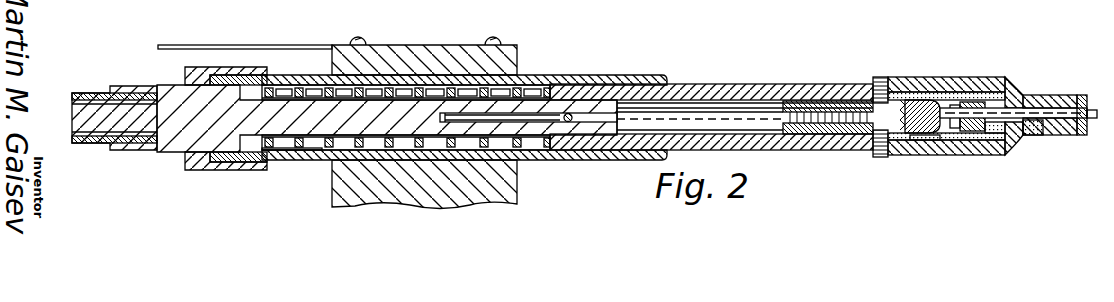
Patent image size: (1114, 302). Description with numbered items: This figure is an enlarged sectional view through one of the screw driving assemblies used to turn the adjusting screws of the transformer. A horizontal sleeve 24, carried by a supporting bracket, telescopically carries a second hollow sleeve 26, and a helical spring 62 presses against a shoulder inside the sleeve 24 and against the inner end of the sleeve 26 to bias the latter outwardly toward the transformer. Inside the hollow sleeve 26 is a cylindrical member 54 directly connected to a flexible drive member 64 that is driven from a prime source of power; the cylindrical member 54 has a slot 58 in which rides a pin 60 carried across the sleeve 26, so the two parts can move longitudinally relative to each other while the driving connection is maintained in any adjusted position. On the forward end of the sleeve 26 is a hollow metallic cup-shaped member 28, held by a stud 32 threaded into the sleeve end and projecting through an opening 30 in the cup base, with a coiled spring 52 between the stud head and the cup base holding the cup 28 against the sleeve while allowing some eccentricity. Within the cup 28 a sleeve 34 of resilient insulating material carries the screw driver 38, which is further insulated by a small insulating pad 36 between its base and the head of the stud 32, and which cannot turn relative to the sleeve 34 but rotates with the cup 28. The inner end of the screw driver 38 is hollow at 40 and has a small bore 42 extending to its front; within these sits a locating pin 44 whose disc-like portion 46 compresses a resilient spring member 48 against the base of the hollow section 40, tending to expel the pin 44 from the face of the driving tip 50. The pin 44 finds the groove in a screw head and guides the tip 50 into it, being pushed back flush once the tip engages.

The horizontal sleeve 24 is at (540, 77).
The second hollow sleeve 26 is at (705, 92).
The cup-shaped member 28 is at (935, 77).
The opening 30 is at (884, 84).
The stud 32 is at (858, 110).
The insulating sleeve 34 is at (950, 140).
The insulating pad 36 is at (922, 150).
The screw driver 38 is at (1050, 94).
The hollow section 40 is at (1000, 145).
The small bore 42 is at (1045, 137).
The locating pin 44 is at (1083, 95).
The disc-like portion 46 is at (1010, 106).
The resilient spring member 48 is at (985, 100).
The driving tip 50 is at (1090, 120).
The coiled spring 52 is at (915, 92).
The cylindrical member 54 is at (316, 98).
The slot 58 is at (500, 118).
The pin 60 is at (571, 114).
The helical spring 62 is at (287, 150).
The flexible drive member 64 is at (100, 93).